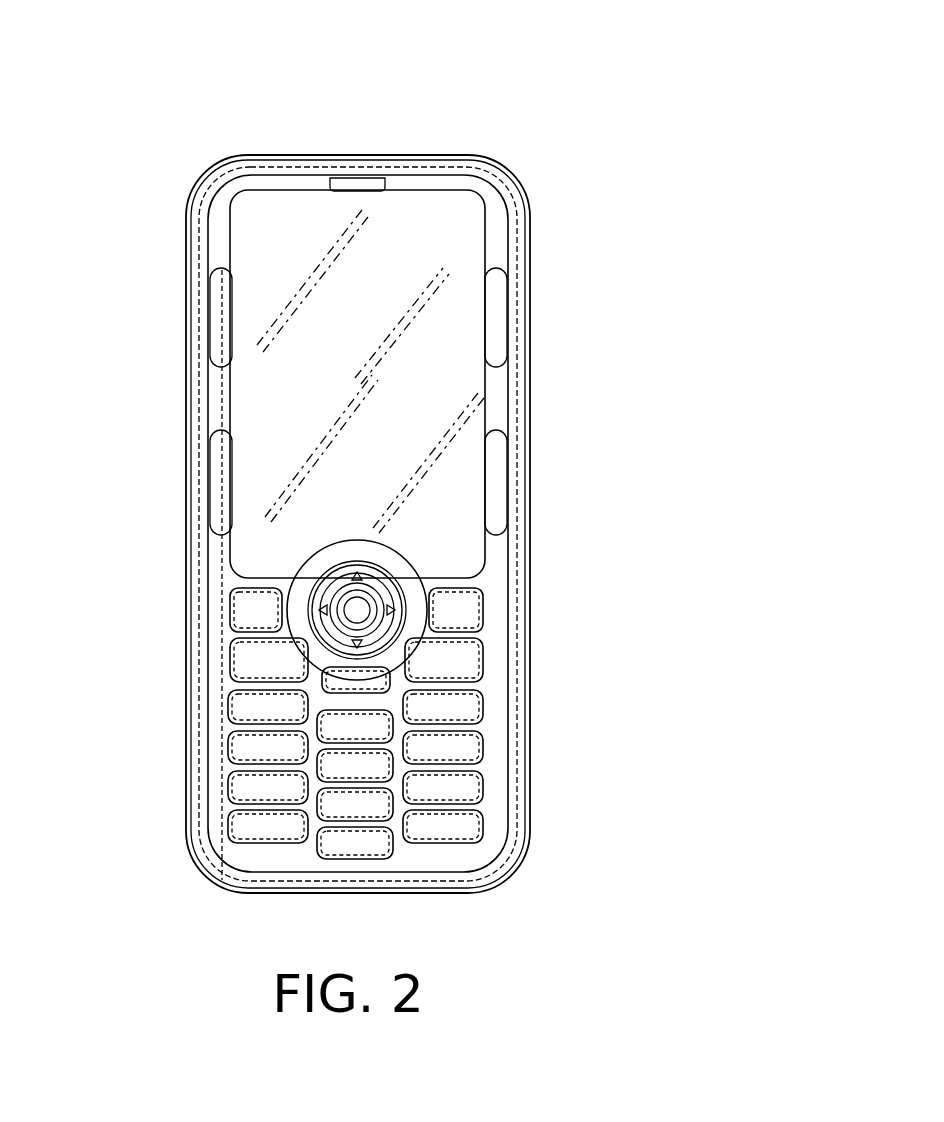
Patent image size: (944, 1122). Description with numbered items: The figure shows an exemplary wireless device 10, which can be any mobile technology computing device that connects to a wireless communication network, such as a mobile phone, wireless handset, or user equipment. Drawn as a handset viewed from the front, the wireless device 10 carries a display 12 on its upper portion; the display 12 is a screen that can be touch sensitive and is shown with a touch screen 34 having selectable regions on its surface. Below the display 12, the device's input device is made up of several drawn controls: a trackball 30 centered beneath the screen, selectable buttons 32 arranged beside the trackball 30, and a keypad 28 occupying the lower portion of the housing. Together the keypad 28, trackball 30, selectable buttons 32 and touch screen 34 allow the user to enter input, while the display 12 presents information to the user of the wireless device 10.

The wireless device 10 is at (263, 98).
The display 12 is at (440, 263).
The touch screen 34 is at (437, 425).
The keypad 28 is at (455, 712).
The trackball 30 is at (362, 610).
The selectable buttons 32 is at (250, 610).